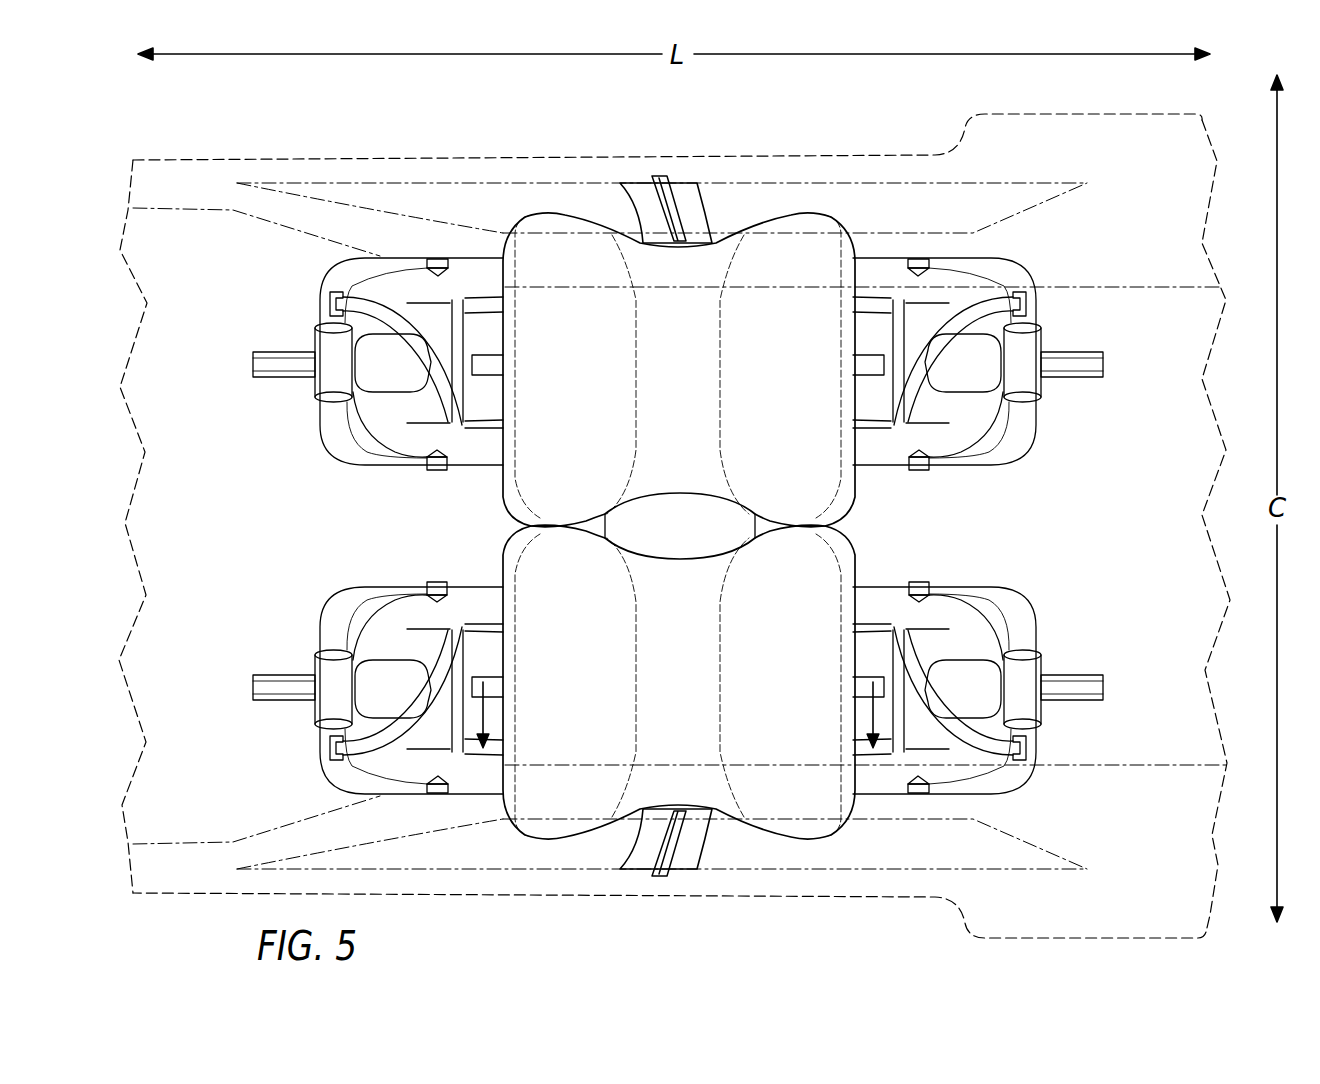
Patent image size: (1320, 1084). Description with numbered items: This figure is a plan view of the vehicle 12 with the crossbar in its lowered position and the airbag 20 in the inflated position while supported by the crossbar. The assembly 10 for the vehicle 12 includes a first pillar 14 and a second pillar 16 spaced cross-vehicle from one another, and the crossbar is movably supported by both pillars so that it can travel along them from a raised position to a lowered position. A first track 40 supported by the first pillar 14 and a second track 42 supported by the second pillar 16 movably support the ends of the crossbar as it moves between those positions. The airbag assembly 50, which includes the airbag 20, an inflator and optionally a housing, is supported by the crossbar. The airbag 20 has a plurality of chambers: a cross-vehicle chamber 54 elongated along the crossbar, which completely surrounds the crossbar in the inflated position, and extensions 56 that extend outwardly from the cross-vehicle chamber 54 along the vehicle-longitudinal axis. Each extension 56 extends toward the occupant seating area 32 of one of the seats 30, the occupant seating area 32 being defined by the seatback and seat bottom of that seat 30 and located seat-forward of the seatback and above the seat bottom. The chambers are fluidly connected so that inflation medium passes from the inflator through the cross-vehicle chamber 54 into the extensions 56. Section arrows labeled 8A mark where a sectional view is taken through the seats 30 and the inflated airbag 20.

The assembly 10 is at (726, 529).
The vehicle 12 is at (915, 121).
The first pillar 14 is at (684, 193).
The second pillar 16 is at (684, 868).
The airbag 20 is at (855, 503).
The seat 30 is at (318, 340).
The occupant seating area 32 is at (451, 476).
The first track 40 is at (657, 175).
The second track 42 is at (662, 876).
The airbag assembly 50 is at (866, 225).
The cross-vehicle chamber 54 is at (680, 523).
The extension 56 is at (552, 224).
The section view 8A is at (681, 699).